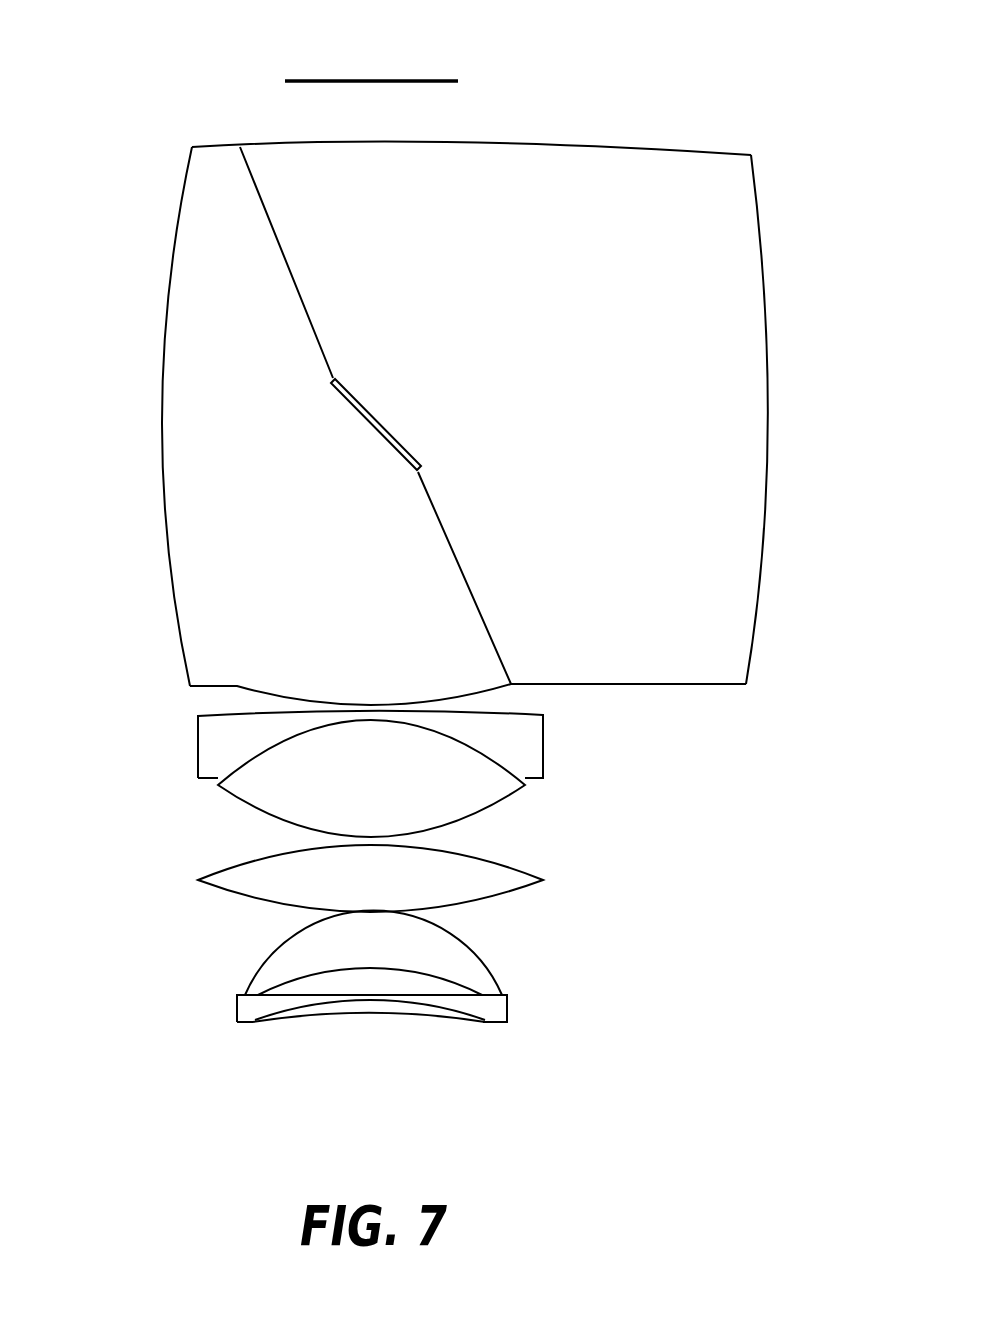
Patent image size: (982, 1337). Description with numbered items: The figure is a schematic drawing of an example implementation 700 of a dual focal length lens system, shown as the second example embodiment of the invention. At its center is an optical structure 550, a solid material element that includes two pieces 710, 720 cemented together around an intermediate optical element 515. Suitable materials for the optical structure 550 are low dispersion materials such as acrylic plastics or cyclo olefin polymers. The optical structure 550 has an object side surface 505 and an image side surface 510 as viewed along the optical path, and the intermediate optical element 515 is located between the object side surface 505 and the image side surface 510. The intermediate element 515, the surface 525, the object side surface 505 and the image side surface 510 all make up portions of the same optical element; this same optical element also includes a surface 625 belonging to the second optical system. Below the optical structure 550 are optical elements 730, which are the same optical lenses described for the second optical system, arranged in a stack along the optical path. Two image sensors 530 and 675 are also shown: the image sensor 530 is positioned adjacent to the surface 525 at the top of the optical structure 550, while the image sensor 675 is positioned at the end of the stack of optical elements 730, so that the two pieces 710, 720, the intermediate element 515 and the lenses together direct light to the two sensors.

The example implementation 700 is at (108, 54).
The image sensor 530 is at (330, 80).
The surface 525 is at (410, 142).
The object side surface 505 is at (182, 185).
The image side surface 510 is at (755, 182).
The piece 710 is at (175, 288).
The piece 720 is at (757, 288).
The intermediate optical element 515 is at (375, 422).
The surface 625 is at (285, 695).
The optical structure 550 is at (673, 684).
The optical elements 730 is at (207, 735).
The image sensor 675 is at (332, 1015).